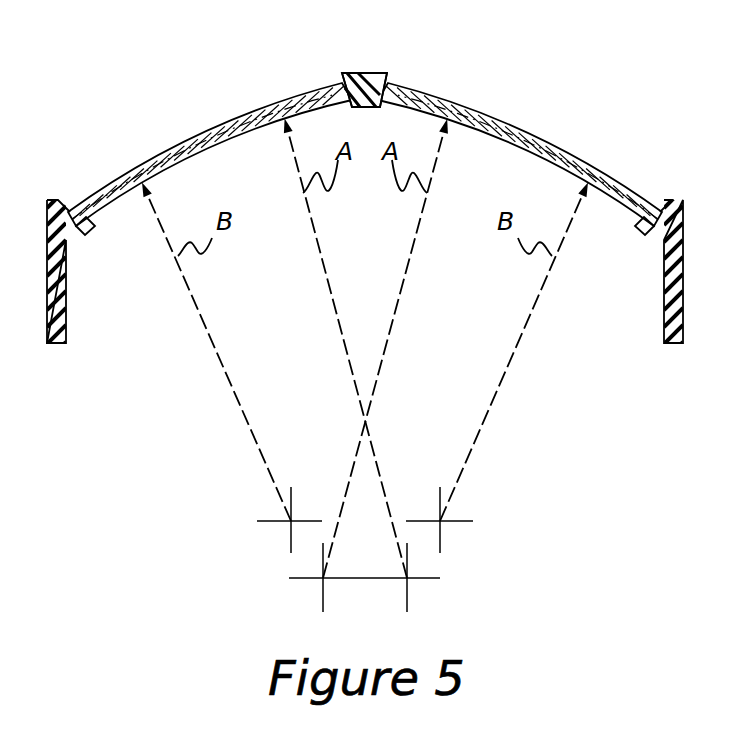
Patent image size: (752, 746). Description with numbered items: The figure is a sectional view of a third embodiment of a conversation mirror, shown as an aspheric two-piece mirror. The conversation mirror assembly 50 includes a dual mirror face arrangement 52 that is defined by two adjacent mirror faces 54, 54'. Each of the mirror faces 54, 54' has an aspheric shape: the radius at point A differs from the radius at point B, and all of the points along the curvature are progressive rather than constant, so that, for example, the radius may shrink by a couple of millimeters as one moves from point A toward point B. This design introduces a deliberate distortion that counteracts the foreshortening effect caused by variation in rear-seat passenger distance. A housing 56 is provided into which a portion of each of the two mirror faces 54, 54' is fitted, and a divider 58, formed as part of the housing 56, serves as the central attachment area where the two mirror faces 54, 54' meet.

The conversation mirror assembly 50 is at (62, 140).
The dual mirror face arrangement 52 is at (167, 150).
The mirror face 54 is at (206, 135).
The mirror face 54' is at (524, 134).
The housing 56 is at (66, 291).
The divider 58 is at (366, 73).